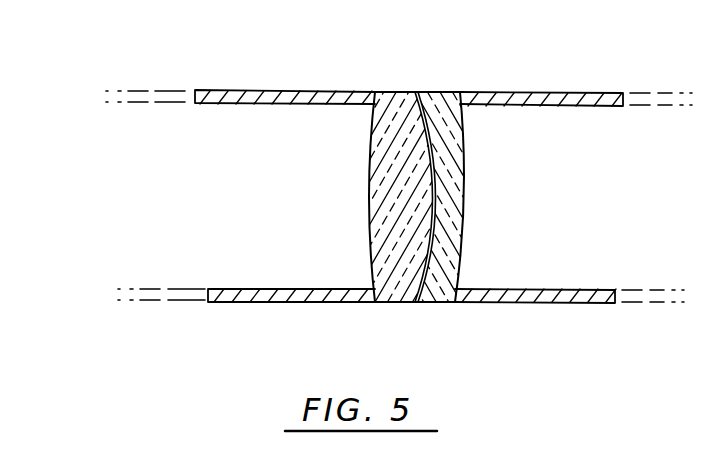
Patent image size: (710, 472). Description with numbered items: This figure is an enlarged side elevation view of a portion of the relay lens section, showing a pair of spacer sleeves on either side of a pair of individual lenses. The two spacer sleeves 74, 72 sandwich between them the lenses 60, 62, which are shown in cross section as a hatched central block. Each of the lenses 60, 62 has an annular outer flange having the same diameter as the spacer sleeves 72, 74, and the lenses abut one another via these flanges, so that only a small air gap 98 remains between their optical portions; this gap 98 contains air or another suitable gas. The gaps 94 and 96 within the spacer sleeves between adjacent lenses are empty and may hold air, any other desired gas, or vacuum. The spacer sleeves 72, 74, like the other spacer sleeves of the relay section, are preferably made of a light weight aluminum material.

The lens 60 is at (374, 129).
The lens 62 is at (460, 130).
The spacer sleeve 72 is at (567, 291).
The spacer sleeve 74 is at (282, 291).
The gap 94 is at (298, 211).
The gap 96 is at (581, 217).
The air gap 98 is at (421, 251).